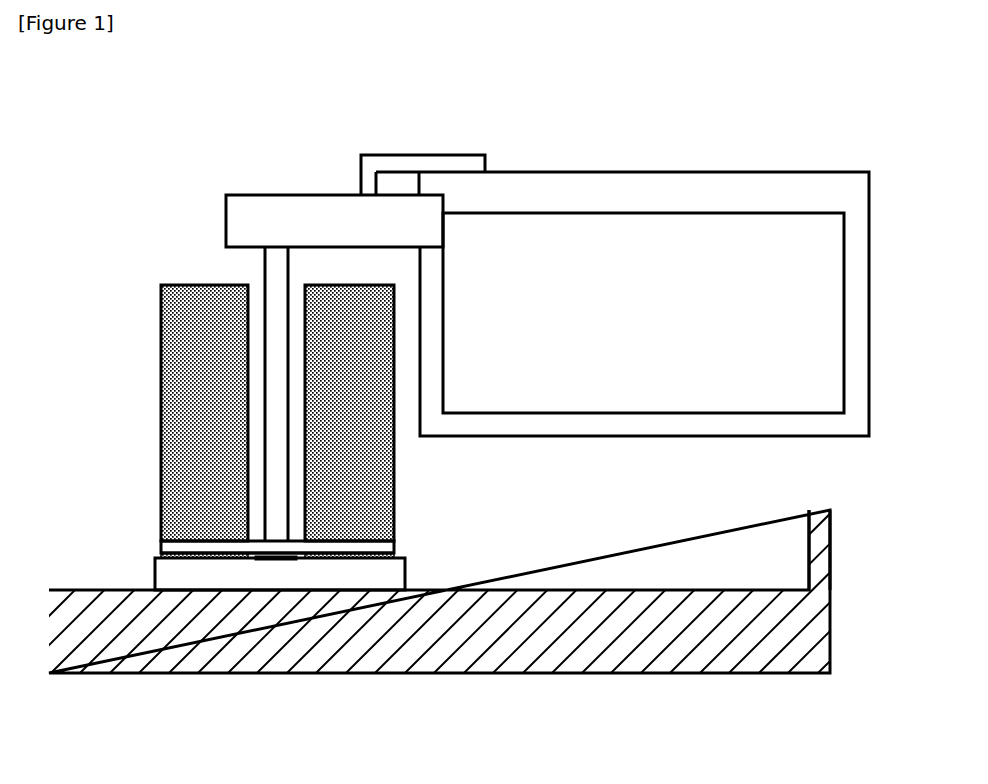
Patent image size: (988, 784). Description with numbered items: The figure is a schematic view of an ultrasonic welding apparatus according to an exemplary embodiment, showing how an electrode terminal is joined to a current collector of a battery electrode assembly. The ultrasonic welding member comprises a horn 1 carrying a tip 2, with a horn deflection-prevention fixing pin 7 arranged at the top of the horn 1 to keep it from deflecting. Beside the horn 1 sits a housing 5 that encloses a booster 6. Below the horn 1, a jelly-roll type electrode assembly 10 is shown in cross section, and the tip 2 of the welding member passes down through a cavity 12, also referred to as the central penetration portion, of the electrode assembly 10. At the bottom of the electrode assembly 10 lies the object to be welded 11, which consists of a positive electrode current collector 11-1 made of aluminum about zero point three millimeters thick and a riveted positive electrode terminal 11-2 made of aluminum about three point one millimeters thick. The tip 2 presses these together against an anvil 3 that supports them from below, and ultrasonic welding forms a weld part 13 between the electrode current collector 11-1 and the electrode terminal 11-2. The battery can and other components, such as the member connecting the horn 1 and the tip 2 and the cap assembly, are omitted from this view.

The horn 1 is at (293, 208).
The tip 2 is at (272, 267).
The anvil 3 is at (825, 523).
The housing 5 is at (615, 183).
The booster 6 is at (820, 327).
The horn deflection-prevention fixing pin 7 is at (392, 160).
The electrode assembly 10 is at (328, 492).
The object to be welded 11 is at (362, 546).
The electrode current collector 11-1 is at (395, 548).
The electrode terminal 11-2 is at (297, 560).
The cavity 12 is at (262, 338).
The weld part 13 is at (267, 560).